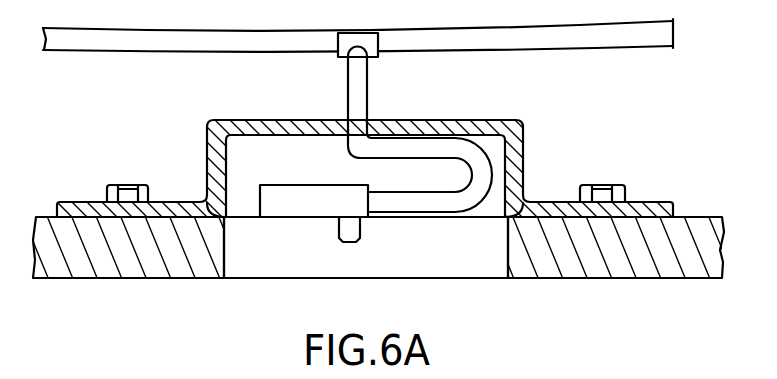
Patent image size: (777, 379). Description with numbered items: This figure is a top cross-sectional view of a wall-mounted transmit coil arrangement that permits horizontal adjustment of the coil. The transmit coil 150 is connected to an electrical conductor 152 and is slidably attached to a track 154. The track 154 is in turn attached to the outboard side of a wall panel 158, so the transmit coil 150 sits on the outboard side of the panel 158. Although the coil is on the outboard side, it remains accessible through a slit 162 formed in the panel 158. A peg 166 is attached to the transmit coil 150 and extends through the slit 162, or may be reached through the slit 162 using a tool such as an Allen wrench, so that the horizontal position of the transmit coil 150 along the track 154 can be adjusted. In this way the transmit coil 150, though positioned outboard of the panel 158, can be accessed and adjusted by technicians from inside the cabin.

The transmit coil 150 is at (317, 209).
The electrical conductor 152 is at (225, 50).
The track 154 is at (207, 156).
The wall panel 158 is at (693, 216).
The slit 162 is at (400, 256).
The peg 166 is at (348, 243).